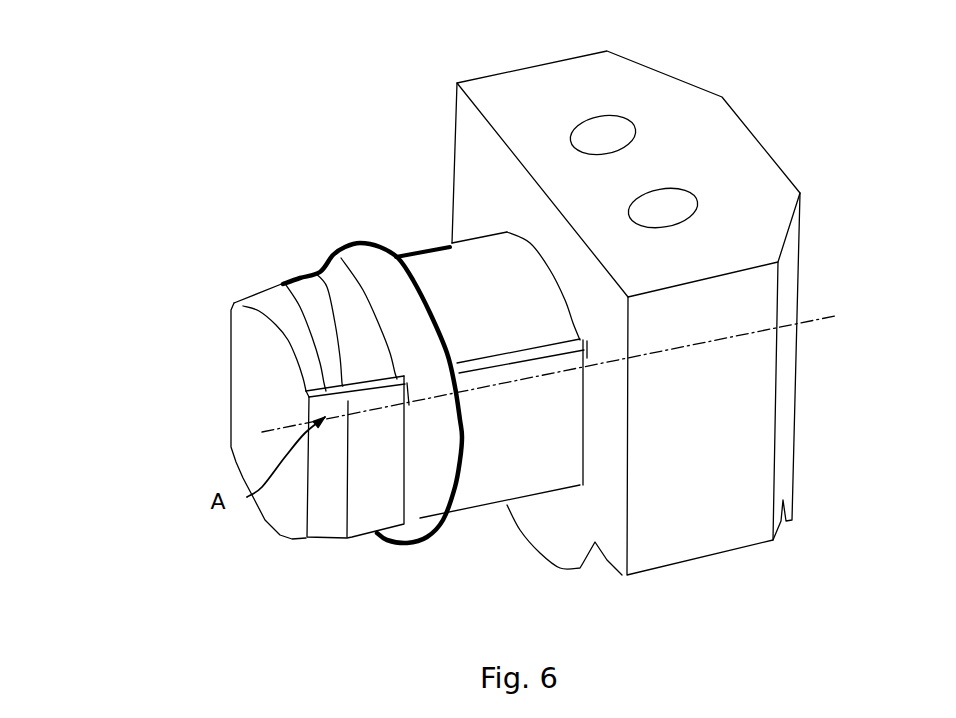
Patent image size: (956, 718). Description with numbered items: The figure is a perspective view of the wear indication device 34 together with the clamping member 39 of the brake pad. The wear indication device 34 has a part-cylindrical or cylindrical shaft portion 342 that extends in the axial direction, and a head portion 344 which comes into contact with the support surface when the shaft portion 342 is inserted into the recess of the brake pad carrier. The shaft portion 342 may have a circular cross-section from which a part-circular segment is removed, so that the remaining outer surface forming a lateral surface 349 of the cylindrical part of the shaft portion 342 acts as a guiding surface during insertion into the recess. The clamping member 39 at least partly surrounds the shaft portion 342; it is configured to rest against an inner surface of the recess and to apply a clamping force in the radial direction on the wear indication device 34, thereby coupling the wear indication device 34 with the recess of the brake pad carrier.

The wear indication device 34 is at (177, 292).
The head portion 344 is at (517, 182).
The lateral surface 349 is at (328, 307).
The shaft portion 342 is at (370, 470).
The clamping member 39 is at (430, 457).